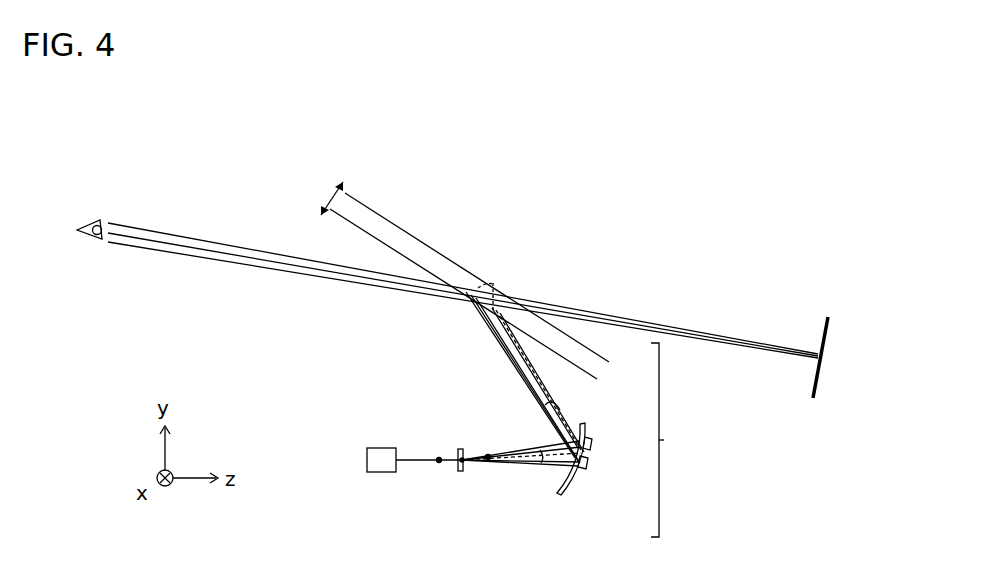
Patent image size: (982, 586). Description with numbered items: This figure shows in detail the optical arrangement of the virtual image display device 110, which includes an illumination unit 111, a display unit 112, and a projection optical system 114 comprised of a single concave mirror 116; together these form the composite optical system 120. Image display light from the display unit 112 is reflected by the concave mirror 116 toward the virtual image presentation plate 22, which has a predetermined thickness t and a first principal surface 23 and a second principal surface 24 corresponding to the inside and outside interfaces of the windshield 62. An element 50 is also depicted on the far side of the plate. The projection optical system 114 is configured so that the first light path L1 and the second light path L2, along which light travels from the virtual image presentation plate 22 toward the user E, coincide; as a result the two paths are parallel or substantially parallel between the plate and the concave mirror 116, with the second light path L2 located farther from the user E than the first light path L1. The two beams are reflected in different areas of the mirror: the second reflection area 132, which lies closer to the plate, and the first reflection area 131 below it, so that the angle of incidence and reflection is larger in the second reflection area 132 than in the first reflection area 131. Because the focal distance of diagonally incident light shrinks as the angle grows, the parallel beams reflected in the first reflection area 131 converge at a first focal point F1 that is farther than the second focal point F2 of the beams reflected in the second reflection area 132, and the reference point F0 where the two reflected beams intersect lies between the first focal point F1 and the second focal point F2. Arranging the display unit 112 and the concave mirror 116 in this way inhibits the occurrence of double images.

The virtual image presentation plate 22 is at (457, 253).
The windshield 62 is at (457, 286).
The first principal surface 23 is at (373, 238).
The second principal surface 24 is at (391, 220).
The mirror / dimmer 50 is at (832, 288).
The virtual image display device 110 is at (340, 408).
The illumination unit 111 is at (366, 460).
The display unit 112 is at (460, 473).
The projection optical system 114 is at (389, 386).
The concave mirror 116 is at (563, 498).
The composite optical system 120 is at (683, 440).
The first reflection area 131 is at (590, 470).
The second reflection area 132 is at (621, 434).
The user E is at (91, 218).
The thickness t is at (330, 196).
The first light path L1 is at (512, 372).
The second light path L2 is at (520, 345).
The reference point F0 is at (462, 457).
The first focal point F1 is at (439, 457).
The second focal point F2 is at (489, 455).